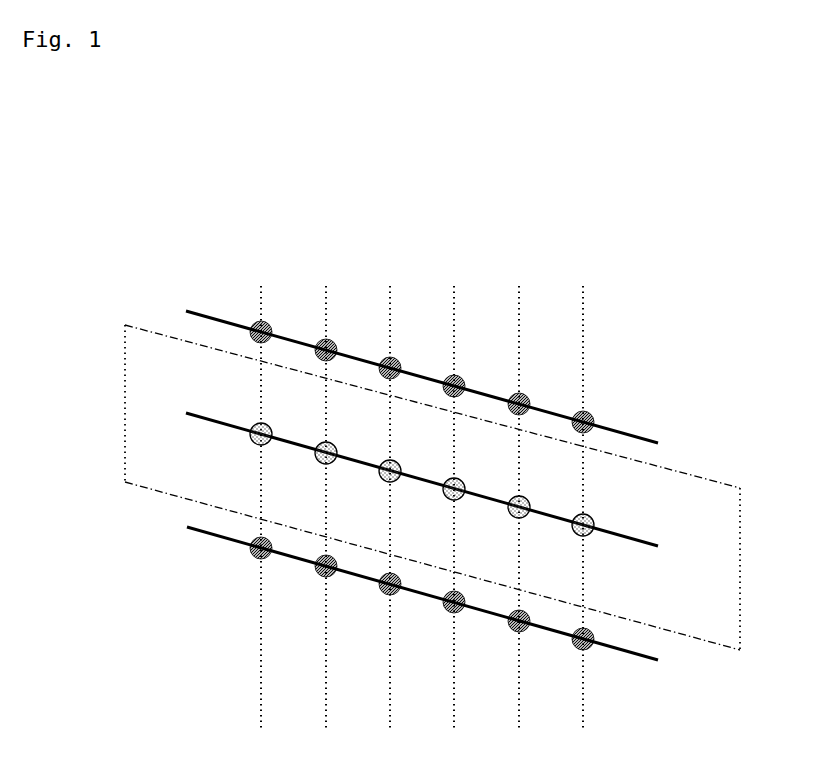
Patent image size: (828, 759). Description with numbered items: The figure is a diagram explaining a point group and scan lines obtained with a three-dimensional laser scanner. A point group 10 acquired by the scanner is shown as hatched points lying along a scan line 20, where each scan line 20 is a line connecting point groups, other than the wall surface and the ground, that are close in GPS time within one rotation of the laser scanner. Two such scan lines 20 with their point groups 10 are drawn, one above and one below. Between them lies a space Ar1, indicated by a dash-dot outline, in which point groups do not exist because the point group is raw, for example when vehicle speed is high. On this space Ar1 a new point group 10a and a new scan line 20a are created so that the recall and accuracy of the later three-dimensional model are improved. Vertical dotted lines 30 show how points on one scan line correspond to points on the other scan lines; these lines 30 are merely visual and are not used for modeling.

The point group 10 is at (592, 414).
The point group 10a is at (592, 514).
The scan line 20 is at (657, 440).
The scan line 20a is at (657, 542).
The line showing correspondence between points on scan lines 30 is at (584, 311).
The space in which point groups do not exist Ar1 is at (741, 488).